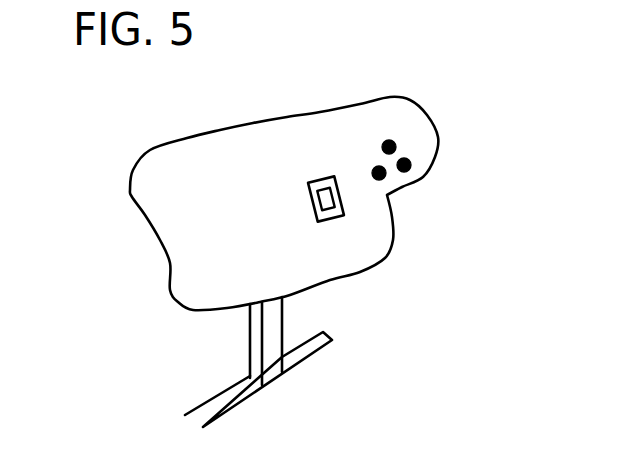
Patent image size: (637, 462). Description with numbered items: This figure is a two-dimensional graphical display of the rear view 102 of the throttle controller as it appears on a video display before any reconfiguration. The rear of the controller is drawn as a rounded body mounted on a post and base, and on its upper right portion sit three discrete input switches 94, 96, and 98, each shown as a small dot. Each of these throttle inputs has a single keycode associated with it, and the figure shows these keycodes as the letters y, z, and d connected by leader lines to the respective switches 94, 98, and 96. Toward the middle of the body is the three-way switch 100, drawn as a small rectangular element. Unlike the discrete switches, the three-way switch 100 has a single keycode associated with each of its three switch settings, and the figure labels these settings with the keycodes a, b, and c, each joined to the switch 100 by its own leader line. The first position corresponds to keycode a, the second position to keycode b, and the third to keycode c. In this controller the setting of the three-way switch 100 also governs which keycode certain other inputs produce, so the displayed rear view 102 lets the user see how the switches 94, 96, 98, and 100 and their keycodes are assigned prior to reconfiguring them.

The discrete input switch 94 is at (392, 142).
The discrete input switch 96 is at (408, 163).
The discrete input switch 98 is at (383, 176).
The three-way switch 100 is at (339, 203).
The rear view of throttle controller 102 is at (366, 345).
The keycode a is at (308, 193).
The keycode b is at (310, 207).
The keycode c is at (315, 220).
The distance d is at (404, 172).
The axis y is at (388, 140).
The axis z is at (377, 169).